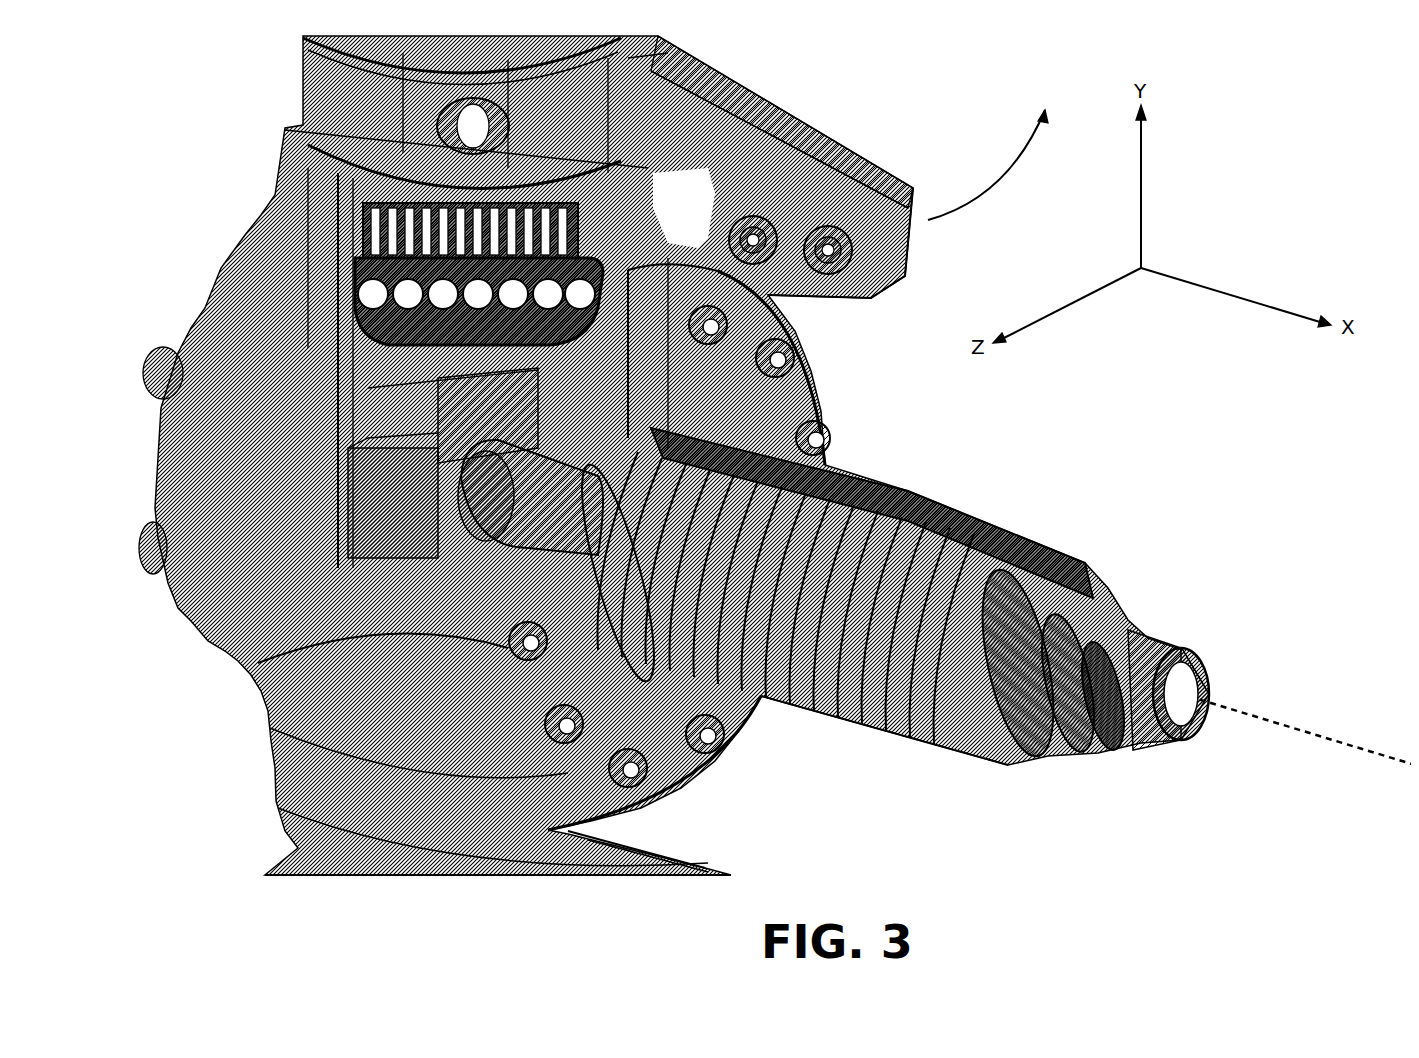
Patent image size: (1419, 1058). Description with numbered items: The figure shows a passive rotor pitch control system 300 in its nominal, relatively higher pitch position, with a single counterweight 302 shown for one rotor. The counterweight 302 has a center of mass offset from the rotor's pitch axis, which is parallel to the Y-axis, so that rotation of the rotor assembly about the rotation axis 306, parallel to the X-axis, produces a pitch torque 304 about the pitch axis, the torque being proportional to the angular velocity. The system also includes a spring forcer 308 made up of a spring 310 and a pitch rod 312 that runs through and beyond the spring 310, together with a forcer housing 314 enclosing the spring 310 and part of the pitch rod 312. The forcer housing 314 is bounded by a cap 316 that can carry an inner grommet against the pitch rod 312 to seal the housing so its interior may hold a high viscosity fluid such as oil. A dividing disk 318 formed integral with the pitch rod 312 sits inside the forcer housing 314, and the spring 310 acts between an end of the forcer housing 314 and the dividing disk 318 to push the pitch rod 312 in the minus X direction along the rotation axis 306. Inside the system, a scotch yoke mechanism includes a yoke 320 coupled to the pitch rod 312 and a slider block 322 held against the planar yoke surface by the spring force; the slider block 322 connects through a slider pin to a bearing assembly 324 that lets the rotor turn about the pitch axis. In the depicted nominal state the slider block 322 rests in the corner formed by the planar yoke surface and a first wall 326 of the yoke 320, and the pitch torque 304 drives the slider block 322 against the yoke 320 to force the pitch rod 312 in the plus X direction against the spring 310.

The passive rotor pitch control system 300 is at (205, 130).
The counterweight 302 is at (835, 152).
The pitch torque 304 is at (987, 187).
The rotation axis 306 is at (1302, 725).
The spring forcer 308 is at (935, 460).
The spring 310 is at (786, 598).
The pitch rod 312 is at (1128, 633).
The forcer housing 314 is at (952, 508).
The cap 316 is at (603, 398).
The dividing disk 318 is at (600, 530).
The yoke 320 is at (453, 415).
The slider block 322 is at (358, 390).
The bearing assembly 324 is at (365, 311).
The first wall 326 is at (338, 440).